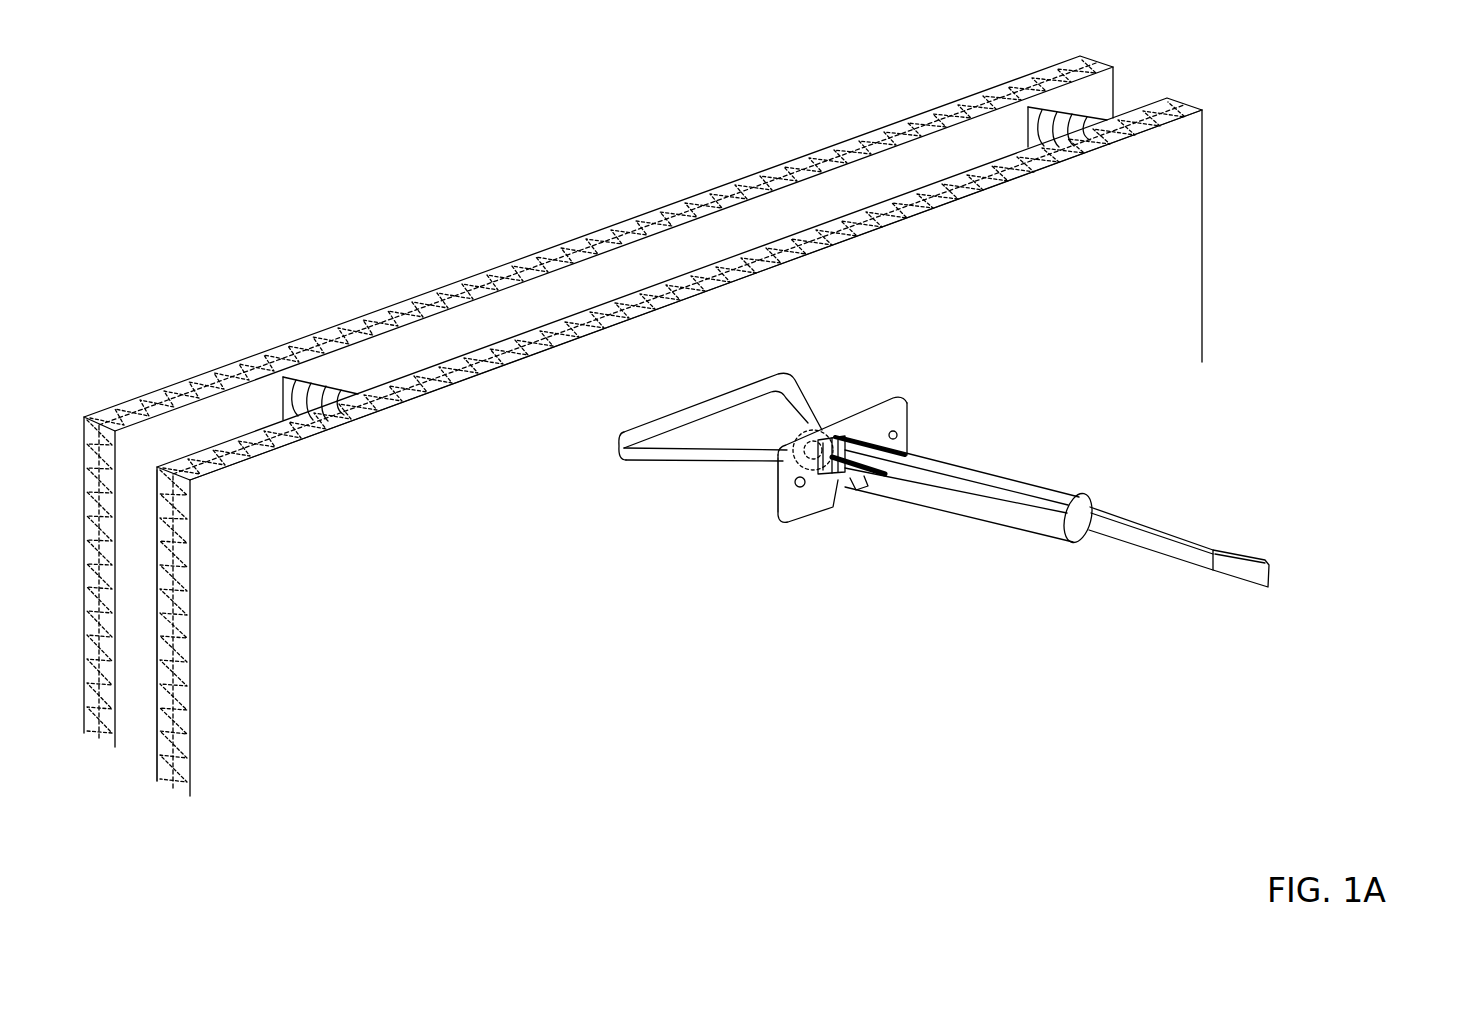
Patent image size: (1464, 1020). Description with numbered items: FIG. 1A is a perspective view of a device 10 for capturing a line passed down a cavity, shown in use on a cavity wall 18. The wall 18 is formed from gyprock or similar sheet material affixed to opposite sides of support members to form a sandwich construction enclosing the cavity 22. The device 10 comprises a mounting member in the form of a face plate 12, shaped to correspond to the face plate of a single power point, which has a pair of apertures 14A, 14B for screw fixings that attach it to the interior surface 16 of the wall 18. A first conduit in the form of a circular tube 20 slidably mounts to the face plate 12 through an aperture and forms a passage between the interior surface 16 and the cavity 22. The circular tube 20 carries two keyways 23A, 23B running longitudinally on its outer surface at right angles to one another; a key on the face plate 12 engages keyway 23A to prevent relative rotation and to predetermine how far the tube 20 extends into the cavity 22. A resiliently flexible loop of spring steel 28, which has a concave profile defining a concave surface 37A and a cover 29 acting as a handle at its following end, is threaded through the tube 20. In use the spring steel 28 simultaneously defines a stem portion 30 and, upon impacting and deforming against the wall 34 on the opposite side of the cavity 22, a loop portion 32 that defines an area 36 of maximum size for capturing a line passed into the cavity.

The device 10 is at (988, 462).
The face plate 12 is at (882, 423).
The aperture 14A is at (905, 403).
The aperture 14B is at (775, 490).
The interior surface 16 is at (988, 288).
The cavity wall 18 is at (1353, 223).
The circular tube 20 is at (940, 507).
The cavity 22 is at (737, 247).
The keyway 23A is at (827, 440).
The keyway 23B is at (775, 512).
The loop of spring steel 28 is at (1148, 517).
The cover 29 is at (1210, 570).
The stem portion 30 is at (890, 483).
The loop portion 32 is at (695, 450).
The wall 34 is at (595, 240).
The area 36 is at (755, 422).
The concave surface 37A is at (1110, 531).